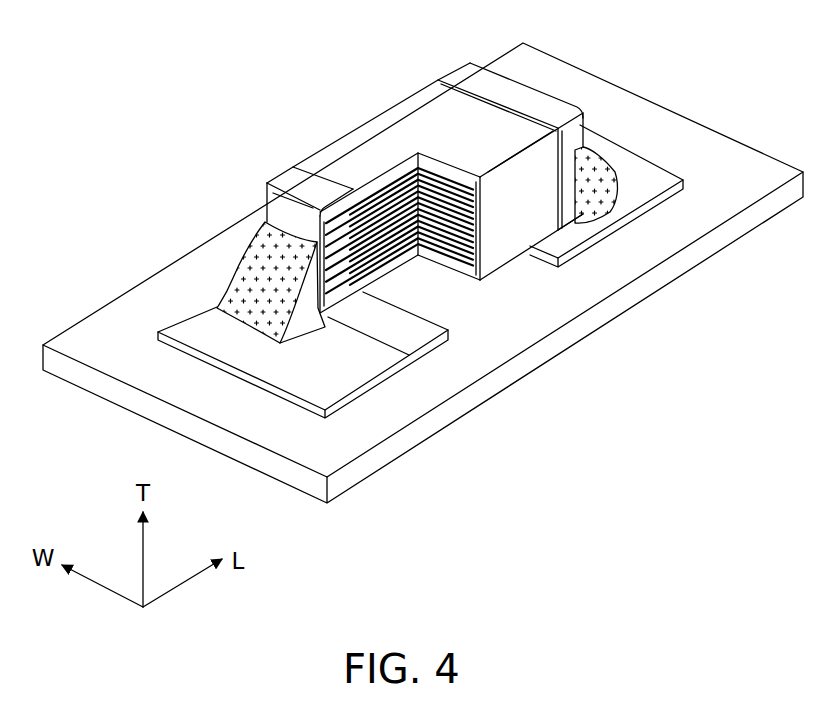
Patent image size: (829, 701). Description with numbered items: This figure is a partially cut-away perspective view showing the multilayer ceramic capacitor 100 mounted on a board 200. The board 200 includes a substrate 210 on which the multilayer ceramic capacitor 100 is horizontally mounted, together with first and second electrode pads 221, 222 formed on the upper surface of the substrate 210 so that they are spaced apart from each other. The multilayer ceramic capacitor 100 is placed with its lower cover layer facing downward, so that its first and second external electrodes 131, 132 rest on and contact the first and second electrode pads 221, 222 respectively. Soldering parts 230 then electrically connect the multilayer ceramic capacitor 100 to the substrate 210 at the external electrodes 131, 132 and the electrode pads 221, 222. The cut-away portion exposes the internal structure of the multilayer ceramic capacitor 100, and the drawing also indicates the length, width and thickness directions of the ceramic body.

The multilayer ceramic capacitor 100 is at (320, 122).
The first external electrode 131 is at (267, 182).
The second external electrode 132 is at (537, 97).
The board 200 is at (598, 393).
The substrate 210 is at (488, 390).
The first electrode pad 221 is at (357, 363).
The second electrode pad 222 is at (635, 188).
The soldering parts 230 is at (262, 258).